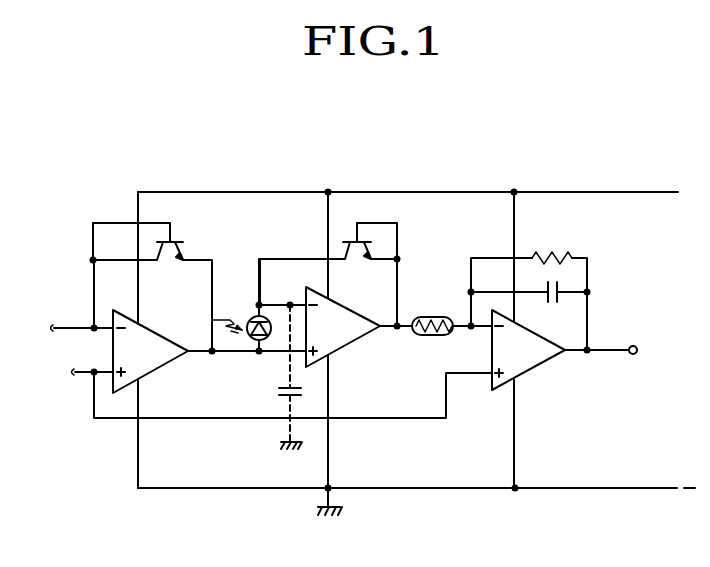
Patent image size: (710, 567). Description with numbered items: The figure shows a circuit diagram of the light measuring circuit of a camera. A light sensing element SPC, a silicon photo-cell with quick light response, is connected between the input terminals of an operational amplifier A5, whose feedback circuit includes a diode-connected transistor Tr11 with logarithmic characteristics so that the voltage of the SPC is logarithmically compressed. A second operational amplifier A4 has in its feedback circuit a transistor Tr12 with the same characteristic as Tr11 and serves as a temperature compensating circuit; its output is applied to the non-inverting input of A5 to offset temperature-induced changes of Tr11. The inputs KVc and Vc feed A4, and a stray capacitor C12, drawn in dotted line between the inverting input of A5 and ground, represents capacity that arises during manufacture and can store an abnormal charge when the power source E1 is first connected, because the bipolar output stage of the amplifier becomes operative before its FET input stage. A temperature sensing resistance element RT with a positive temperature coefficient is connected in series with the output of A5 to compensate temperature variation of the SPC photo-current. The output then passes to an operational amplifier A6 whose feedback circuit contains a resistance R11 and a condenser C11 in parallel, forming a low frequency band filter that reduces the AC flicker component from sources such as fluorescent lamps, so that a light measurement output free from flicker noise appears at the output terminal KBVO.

The power source E1 is at (417, 192).
The scaled reference voltage input KVc is at (65, 329).
The reference voltage input Vc is at (81, 374).
The operational amplifier A4 is at (150, 351).
The operational amplifier A5 is at (343, 327).
The operational amplifier A6 is at (528, 350).
The temperature compensation transistor Tr12 is at (184, 251).
The compressing transistor Tr11 is at (368, 254).
The light sensing element SPC is at (250, 313).
The stray capacitor C12 is at (280, 391).
The condenser C11 is at (553, 302).
The resistance R11 is at (557, 253).
The temperature sensing resistance element RT is at (441, 313).
The output terminal KBVO is at (621, 352).